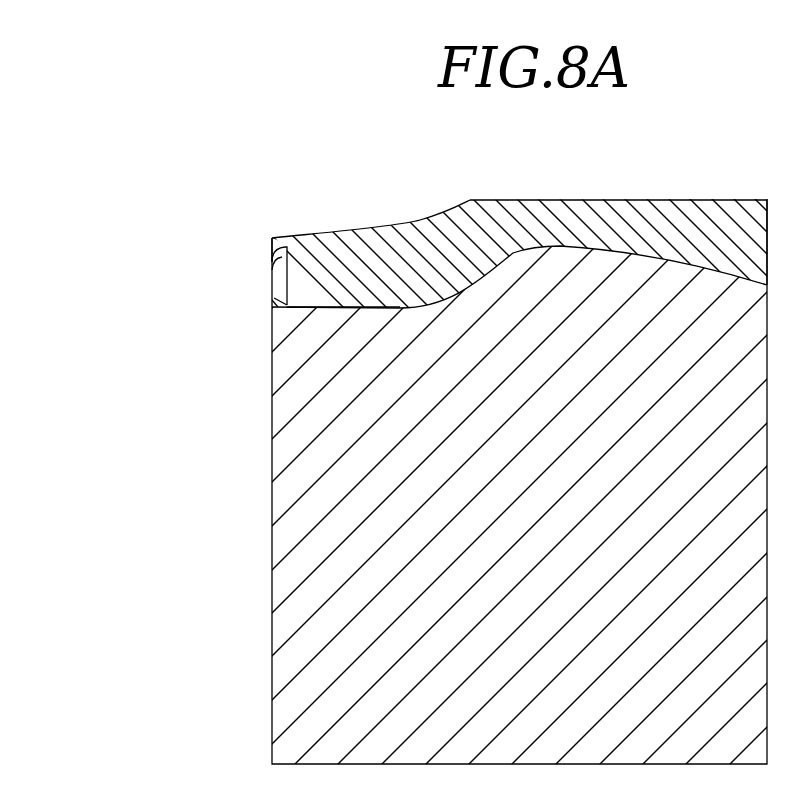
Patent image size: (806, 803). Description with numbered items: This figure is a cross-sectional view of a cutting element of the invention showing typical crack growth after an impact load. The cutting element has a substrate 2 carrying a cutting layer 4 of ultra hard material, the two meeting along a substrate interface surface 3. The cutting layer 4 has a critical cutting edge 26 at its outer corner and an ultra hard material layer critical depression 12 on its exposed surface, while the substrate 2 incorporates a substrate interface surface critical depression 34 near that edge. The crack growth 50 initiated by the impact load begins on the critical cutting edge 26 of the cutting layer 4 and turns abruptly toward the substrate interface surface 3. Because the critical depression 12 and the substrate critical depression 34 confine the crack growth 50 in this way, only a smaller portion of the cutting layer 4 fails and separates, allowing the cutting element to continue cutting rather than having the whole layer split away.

The substrate 2 is at (352, 545).
The cutting layer 4 is at (558, 212).
The ultra hard material layer critical depression 12 is at (383, 226).
The substrate interface surface 3 is at (368, 310).
The critical cutting edge 26 is at (272, 238).
The substrate interface surface critical depression 34 is at (296, 311).
The crack growth 50 is at (293, 283).